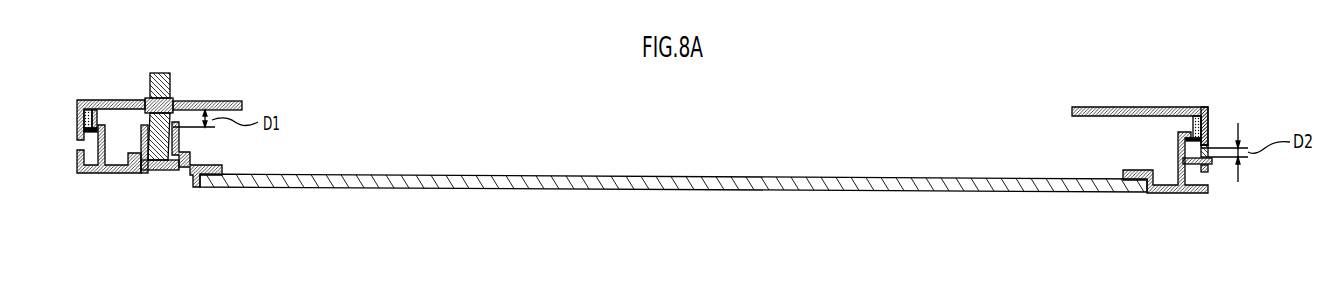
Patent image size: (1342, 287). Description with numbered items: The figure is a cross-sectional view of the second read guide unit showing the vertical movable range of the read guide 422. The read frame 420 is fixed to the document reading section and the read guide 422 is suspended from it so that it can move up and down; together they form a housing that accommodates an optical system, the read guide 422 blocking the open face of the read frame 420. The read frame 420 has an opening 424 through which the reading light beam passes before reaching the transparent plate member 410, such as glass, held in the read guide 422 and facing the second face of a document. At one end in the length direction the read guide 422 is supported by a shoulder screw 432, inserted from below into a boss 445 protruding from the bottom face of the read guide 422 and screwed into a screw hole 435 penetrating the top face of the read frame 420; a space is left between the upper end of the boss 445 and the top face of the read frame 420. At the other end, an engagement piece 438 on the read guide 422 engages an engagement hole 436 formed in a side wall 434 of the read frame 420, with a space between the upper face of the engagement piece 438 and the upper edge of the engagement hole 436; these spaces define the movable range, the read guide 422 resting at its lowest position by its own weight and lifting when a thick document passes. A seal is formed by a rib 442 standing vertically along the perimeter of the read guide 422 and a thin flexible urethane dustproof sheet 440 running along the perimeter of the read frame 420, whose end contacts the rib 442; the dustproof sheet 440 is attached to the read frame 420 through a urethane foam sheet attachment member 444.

The plate member 410 is at (895, 192).
The read frame 420 is at (1108, 100).
The read guide 422 is at (1163, 200).
The opening 424 is at (1002, 113).
The shoulder screw 432 is at (165, 170).
The side wall 434 is at (1208, 117).
The screw hole 435 is at (170, 97).
The engagement hole 436 is at (1207, 150).
The engagement piece 438 is at (1213, 162).
The dustproof sheet 440 is at (95, 123).
The rib 442 is at (98, 150).
The sheet attachment member 444 is at (78, 118).
The boss 445 is at (140, 137).